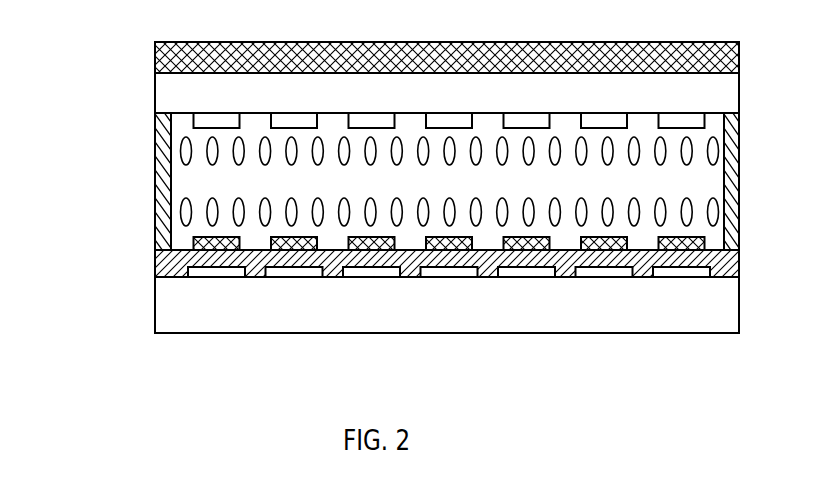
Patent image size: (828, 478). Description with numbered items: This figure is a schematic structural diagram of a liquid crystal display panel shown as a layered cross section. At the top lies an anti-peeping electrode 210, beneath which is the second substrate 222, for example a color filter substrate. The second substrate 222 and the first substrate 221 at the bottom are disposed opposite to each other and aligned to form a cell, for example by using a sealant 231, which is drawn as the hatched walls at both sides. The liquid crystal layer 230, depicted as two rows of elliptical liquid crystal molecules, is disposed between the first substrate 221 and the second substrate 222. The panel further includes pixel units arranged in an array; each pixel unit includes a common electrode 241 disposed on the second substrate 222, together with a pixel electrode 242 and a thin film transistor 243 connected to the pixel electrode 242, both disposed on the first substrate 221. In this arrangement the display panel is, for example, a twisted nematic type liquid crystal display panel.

The anti-peeping electrode 210 is at (182, 57).
The second substrate 222 is at (183, 90).
The common electrode 241 is at (205, 120).
The liquid crystal layer 230 is at (187, 153).
The sealant 231 is at (160, 195).
The pixel electrode 242 is at (197, 245).
The thin film transistor 243 is at (193, 270).
The first substrate 221 is at (185, 308).